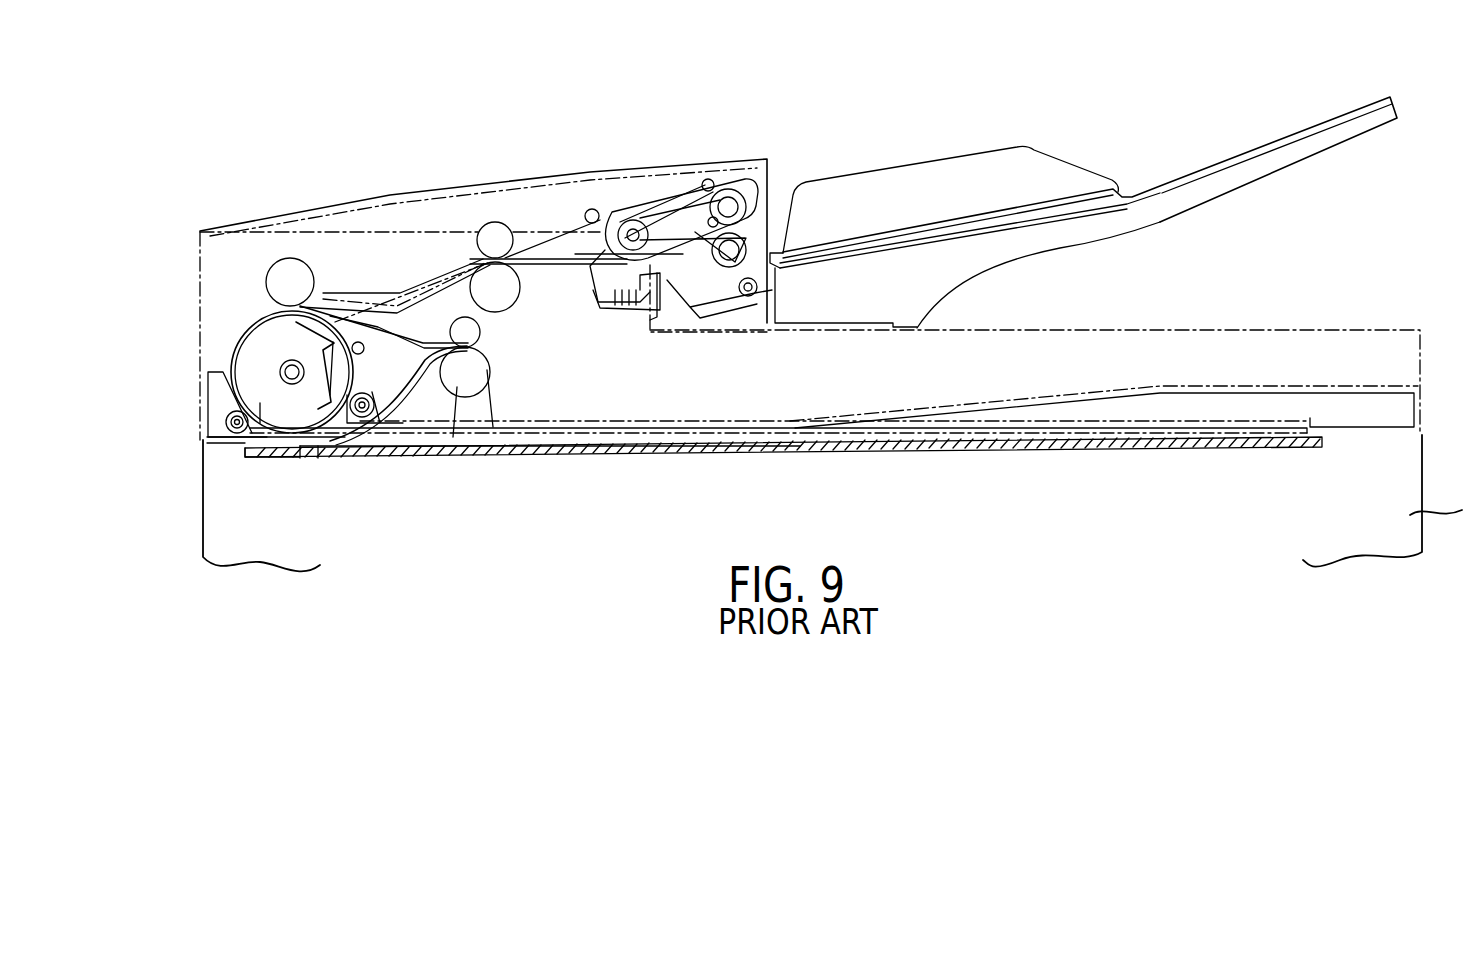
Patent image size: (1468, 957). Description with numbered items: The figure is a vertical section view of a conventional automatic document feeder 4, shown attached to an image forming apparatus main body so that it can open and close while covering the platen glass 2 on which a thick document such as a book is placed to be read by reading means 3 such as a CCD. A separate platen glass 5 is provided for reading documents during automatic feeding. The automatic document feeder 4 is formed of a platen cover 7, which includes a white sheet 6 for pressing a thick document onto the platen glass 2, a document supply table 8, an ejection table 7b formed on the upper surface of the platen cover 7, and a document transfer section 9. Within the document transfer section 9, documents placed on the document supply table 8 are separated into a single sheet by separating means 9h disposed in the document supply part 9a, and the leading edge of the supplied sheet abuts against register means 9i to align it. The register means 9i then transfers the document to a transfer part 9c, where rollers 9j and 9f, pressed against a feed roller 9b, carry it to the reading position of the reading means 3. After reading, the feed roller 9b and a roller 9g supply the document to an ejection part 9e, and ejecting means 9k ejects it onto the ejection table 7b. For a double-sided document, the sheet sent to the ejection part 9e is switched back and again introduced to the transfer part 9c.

The platen glass 2 is at (898, 452).
The reading means 3 is at (292, 458).
The automatic document feeder 4 is at (970, 122).
The platen glass 5 is at (248, 455).
The white sheet 6 is at (1163, 435).
The platen cover 7 is at (1335, 329).
The ejection table 7b is at (1130, 388).
The document supply table 8 is at (1278, 140).
The document transfer section 9 is at (416, 262).
The document supply part 9a is at (607, 197).
The feed roller 9b is at (243, 358).
The transfer part 9c is at (227, 390).
The ejection part 9e is at (415, 370).
The roller 9f is at (222, 426).
The roller 9g is at (384, 416).
The separating means 9h is at (666, 184).
The register means 9i is at (514, 304).
The roller 9j is at (280, 268).
The ejecting means 9k is at (453, 386).